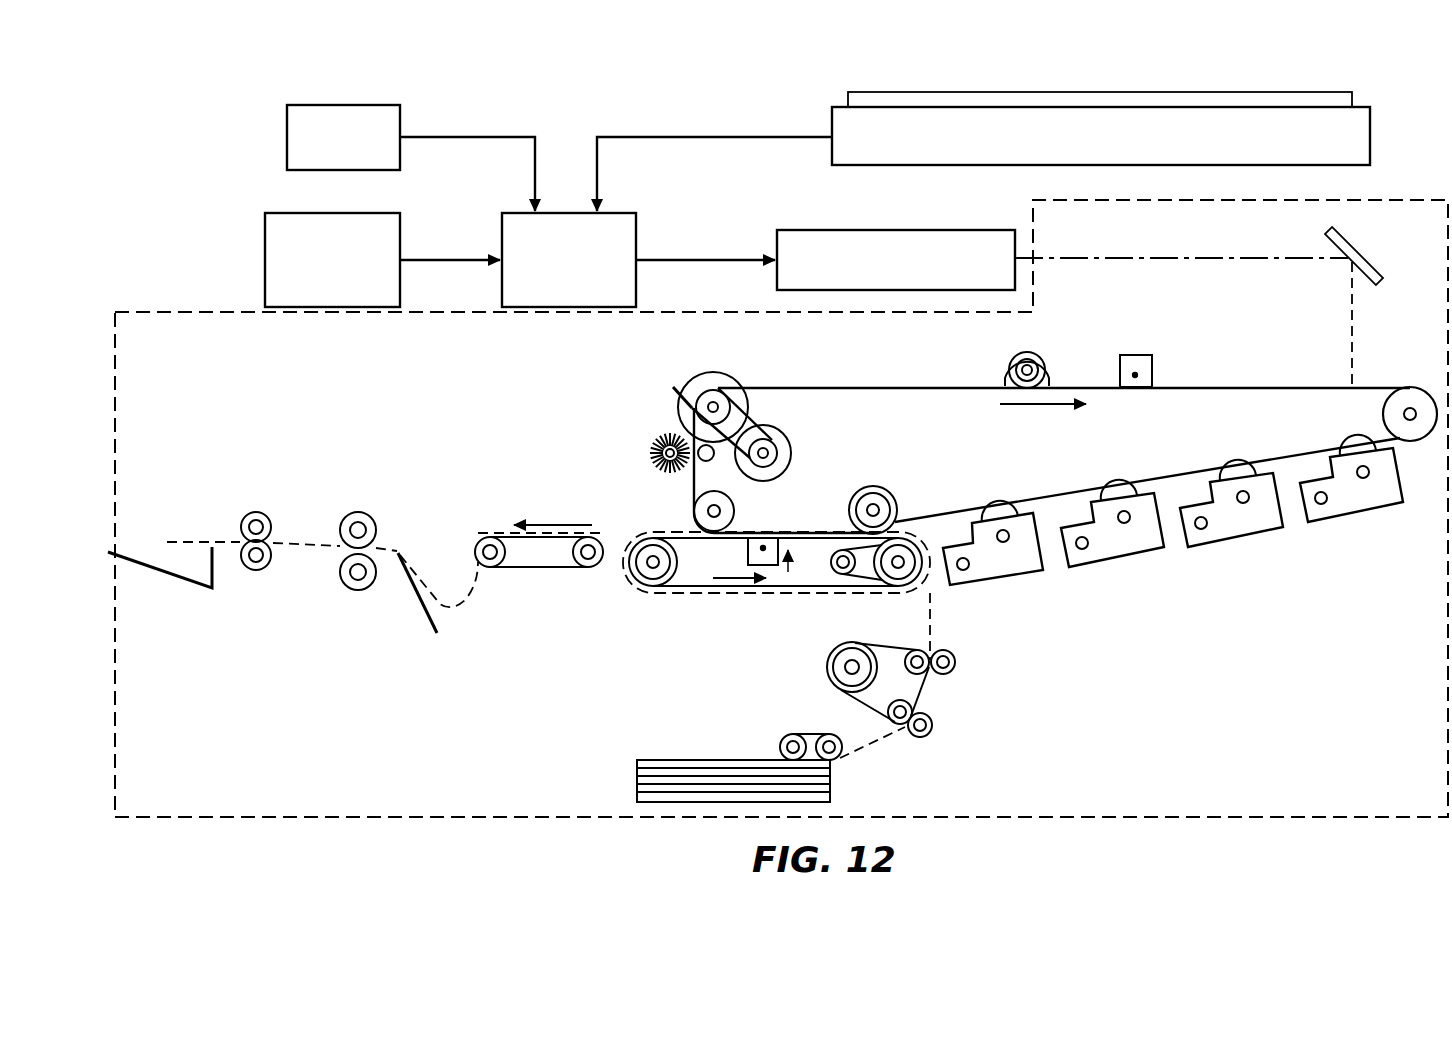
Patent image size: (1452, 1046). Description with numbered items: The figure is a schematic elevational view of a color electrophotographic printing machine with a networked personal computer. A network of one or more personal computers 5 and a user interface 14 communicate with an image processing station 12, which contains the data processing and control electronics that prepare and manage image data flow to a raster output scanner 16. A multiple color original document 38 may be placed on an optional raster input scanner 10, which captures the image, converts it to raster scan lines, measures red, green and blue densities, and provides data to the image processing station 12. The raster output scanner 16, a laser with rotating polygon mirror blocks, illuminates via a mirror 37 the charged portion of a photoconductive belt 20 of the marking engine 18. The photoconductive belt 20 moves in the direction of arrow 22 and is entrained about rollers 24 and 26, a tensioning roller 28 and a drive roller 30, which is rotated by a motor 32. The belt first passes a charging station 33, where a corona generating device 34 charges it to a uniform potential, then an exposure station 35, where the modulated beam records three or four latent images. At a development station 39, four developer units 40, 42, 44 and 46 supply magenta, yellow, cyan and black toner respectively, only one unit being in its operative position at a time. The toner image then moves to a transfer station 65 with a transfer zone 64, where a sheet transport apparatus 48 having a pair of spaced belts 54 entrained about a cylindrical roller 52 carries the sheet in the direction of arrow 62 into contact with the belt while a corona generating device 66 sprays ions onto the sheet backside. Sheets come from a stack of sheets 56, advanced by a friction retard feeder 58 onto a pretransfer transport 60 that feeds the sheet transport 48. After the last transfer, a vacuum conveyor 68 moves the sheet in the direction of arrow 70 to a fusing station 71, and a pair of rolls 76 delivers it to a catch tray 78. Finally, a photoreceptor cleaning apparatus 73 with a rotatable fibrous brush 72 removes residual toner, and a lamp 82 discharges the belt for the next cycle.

The personal computer network 5 is at (278, 138).
The raster input scanner 10 is at (826, 95).
The image processing station 12 is at (620, 196).
The user interface 14 is at (255, 242).
The raster output scanner 16 is at (934, 204).
The marking engine 18 is at (1392, 178).
The photoconductive belt 20 is at (1264, 385).
The arrow 22 is at (1030, 410).
The roller 24 is at (724, 512).
The roller 26 is at (898, 508).
The tensioning roller 28 is at (1426, 386).
The drive roller 30 is at (712, 372).
The motor 32 is at (785, 442).
The charging station 33 is at (1173, 382).
The corona generating device 34 is at (1143, 355).
The exposure station 35 is at (1338, 381).
The mirror 37 is at (1345, 232).
The original document 38 is at (1242, 92).
The development station 39 is at (1228, 645).
The developer unit 40 is at (1343, 507).
The developer unit 42 is at (1230, 530).
The developer unit 44 is at (1112, 550).
The developer unit 46 is at (995, 572).
The sheet transport apparatus 48 is at (670, 612).
The roller 52 is at (910, 590).
The belts 54 is at (803, 592).
The stack of sheets 56 is at (683, 760).
The friction retard feeder 58 is at (826, 735).
The pretransfer transport 60 is at (925, 686).
The arrow 62 is at (748, 592).
The transfer zone 64 is at (773, 521).
The transfer station 65 is at (827, 585).
The corona generating device 66 is at (673, 562).
The vacuum conveyor 68 is at (546, 572).
The arrow 70 is at (564, 522).
The fusing station 71 is at (378, 486).
The fibrous brush 72 is at (640, 447).
The photoreceptor cleaning apparatus 73 is at (650, 424).
The pair of rolls 76 is at (258, 527).
The catch tray 78 is at (182, 580).
The lamp 82 is at (1048, 350).